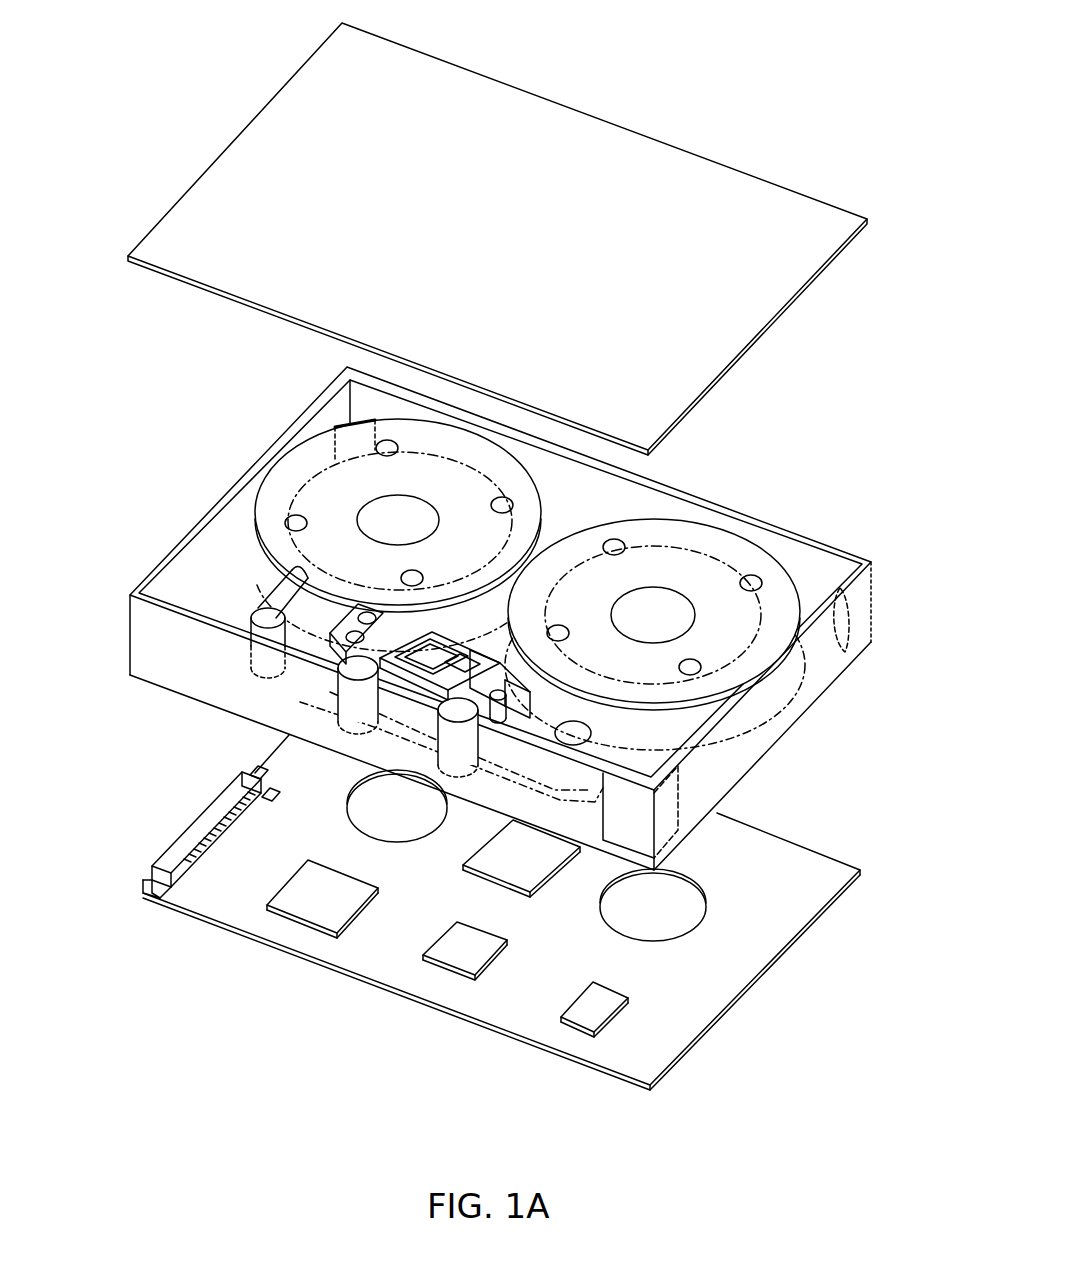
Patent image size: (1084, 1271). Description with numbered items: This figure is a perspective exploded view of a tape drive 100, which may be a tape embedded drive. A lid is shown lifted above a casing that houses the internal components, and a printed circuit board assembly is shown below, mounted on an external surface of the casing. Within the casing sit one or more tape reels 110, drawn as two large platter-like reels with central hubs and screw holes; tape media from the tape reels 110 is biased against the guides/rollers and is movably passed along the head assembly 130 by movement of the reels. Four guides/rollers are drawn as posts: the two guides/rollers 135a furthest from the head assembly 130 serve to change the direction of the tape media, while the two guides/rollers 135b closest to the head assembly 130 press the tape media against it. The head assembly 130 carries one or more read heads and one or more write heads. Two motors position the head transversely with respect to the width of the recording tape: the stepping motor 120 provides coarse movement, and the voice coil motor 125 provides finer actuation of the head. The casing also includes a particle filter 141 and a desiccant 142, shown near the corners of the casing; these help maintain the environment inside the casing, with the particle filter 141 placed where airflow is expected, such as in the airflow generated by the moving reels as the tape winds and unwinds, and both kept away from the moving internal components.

The tape drive 100 is at (771, 94).
The tape reels 110 is at (453, 428).
The stepping motor 120 is at (322, 633).
The voice coil motor 125 is at (420, 655).
The head assembly 130 is at (420, 690).
The guides/rollers 135a is at (258, 616).
The guides/rollers 135b is at (350, 682).
The particle filter 141 is at (848, 622).
The desiccant 142 is at (665, 810).